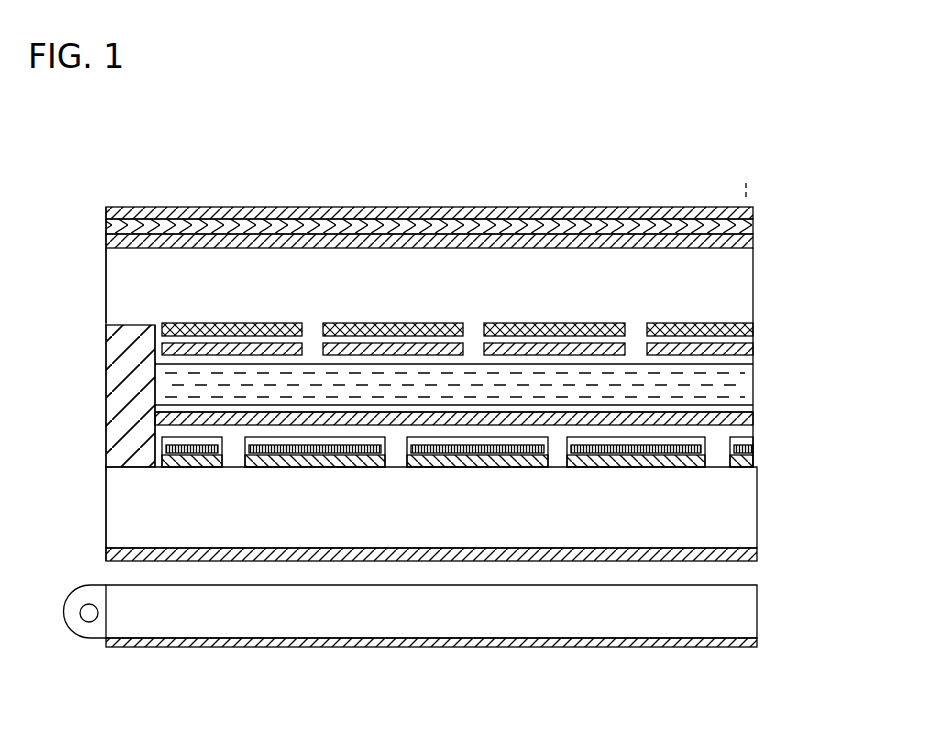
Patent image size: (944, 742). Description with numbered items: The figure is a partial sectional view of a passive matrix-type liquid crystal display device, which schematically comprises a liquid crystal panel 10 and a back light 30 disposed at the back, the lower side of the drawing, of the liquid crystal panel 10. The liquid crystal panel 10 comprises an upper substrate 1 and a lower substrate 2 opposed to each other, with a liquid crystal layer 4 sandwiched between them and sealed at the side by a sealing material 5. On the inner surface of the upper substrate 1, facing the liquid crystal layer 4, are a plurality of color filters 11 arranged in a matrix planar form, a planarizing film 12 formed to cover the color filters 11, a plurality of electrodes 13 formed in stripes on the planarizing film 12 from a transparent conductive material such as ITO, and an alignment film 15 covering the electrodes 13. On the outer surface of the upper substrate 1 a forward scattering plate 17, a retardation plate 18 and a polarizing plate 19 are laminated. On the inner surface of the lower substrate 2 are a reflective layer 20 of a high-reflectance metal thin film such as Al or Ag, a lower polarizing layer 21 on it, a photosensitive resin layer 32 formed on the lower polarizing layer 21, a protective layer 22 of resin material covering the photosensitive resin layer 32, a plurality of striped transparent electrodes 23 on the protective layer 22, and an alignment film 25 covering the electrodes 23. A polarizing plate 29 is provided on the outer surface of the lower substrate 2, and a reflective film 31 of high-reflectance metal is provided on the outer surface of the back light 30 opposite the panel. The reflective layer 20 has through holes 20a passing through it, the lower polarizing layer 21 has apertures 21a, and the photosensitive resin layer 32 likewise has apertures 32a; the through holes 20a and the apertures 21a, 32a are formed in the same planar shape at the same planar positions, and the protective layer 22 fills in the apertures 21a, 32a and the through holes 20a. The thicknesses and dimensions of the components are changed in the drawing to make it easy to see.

The liquid crystal panel 10 is at (721, 204).
The upper substrate 1 is at (745, 285).
The lower substrate 2 is at (750, 506).
The liquid crystal layer 4 is at (745, 386).
The sealing material 5 is at (130, 336).
The color filters 11 is at (178, 326).
The planarizing film 12 is at (753, 333).
The electrodes 13 is at (242, 345).
The alignment film 15 is at (753, 353).
The forward scattering plate 17 is at (753, 245).
The retardation plate 18 is at (753, 226).
The polarizing plate 19 is at (753, 209).
The reflective layer 20 is at (462, 468).
The through holes 20a is at (245, 458).
The lower polarizing layer 21 is at (745, 463).
The apertures 21a is at (233, 468).
The protective layer 22 is at (753, 440).
The electrodes 23 is at (753, 420).
The alignment film 25 is at (753, 407).
The polarizing plate 29 is at (757, 556).
The back light 30 is at (757, 612).
The reflective film 31 is at (757, 641).
The photosensitive resin layer 32 is at (753, 448).
The apertures 32a is at (222, 460).